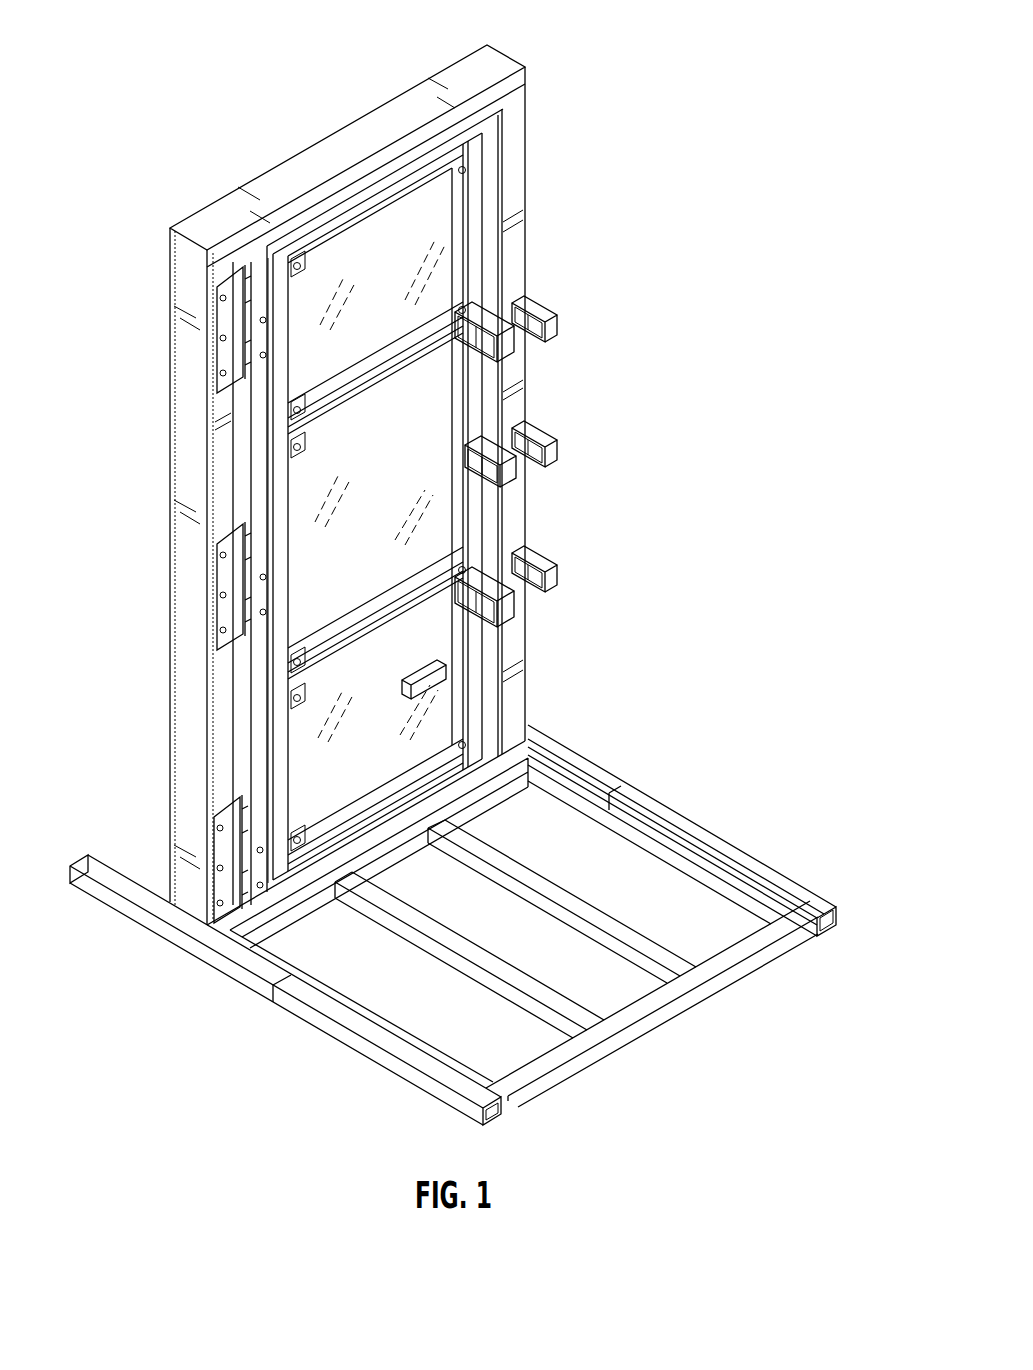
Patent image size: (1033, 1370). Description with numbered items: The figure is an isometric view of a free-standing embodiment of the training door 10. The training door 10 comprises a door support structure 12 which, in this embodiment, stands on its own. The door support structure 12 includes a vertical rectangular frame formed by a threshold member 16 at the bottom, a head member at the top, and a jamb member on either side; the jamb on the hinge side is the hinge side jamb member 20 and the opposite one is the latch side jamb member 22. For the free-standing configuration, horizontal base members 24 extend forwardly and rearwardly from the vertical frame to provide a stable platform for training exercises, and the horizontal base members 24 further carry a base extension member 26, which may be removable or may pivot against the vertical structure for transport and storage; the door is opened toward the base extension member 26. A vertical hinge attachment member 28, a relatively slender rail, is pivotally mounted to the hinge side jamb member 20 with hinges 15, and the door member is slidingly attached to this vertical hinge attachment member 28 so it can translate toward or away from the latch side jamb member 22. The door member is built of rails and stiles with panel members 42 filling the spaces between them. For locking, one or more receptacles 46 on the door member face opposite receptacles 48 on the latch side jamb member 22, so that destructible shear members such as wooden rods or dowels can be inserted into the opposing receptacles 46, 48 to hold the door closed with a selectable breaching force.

The training door 10 is at (662, 30).
The door support structure 12 is at (194, 197).
The hinges 15 is at (208, 302).
The threshold member 16 is at (486, 803).
The hinge side jamb member 20 is at (186, 508).
The latch side jamb member 22 is at (514, 183).
The horizontal base members 24 is at (568, 753).
The base extension member 26 is at (641, 1026).
The vertical hinge attachment member 28 is at (236, 466).
The panel members 42 is at (373, 758).
The receptacles 46 is at (496, 346).
The opposite facing receptacles 48 is at (531, 305).